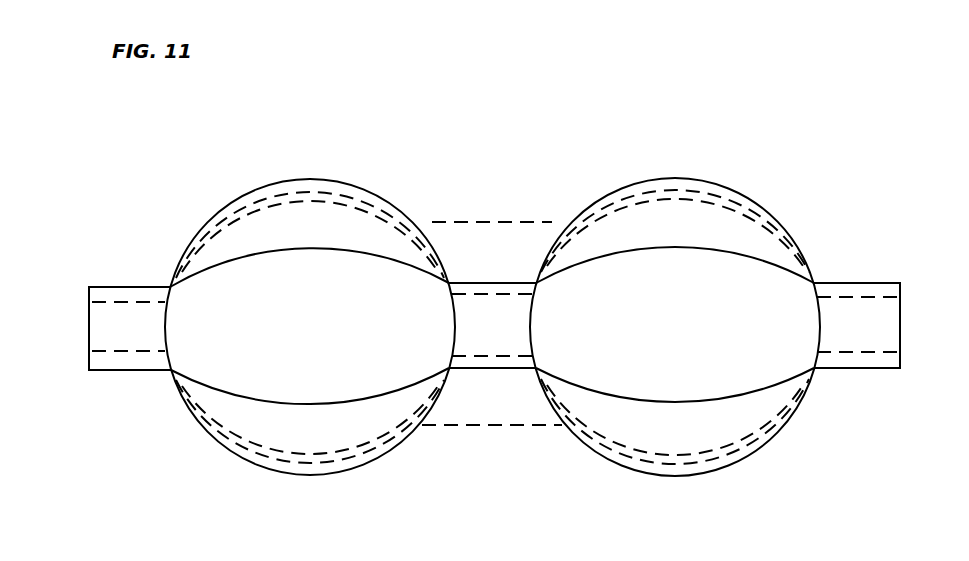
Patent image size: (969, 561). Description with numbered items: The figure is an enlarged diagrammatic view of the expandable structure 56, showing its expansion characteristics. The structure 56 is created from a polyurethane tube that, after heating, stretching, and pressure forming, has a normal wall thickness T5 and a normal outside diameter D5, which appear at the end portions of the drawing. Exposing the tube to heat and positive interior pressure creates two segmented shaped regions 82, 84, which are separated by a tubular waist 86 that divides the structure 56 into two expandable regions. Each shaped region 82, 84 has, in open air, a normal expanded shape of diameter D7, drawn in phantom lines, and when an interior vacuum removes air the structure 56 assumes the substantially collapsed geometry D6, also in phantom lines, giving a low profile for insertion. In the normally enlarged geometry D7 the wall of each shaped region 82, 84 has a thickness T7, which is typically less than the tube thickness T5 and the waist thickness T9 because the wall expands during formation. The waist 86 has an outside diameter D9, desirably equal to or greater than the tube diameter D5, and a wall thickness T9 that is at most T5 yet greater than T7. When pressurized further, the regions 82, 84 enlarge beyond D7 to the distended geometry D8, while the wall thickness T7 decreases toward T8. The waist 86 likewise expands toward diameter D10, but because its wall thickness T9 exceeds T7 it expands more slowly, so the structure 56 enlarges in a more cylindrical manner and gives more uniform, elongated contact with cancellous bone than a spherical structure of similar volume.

The expandable structure 56 is at (468, 86).
The first shaped region 82 is at (373, 187).
The second shaped region 84 is at (740, 187).
The tubular waist 86 is at (503, 183).
The normal outside diameter of the tube D5 is at (107, 287).
The collapsed diameter D6 is at (302, 248).
The normal expanded diameter D7 is at (320, 192).
The distended diameter D8 is at (300, 179).
The waist outside diameter D9 is at (480, 282).
The expanded waist diameter D10 is at (440, 221).
The normal wall thickness of the tube T5 is at (122, 351).
The shaped region wall thickness T7 is at (390, 205).
The distended wall thickness T8 is at (233, 189).
The waist wall thickness T9 is at (498, 282).